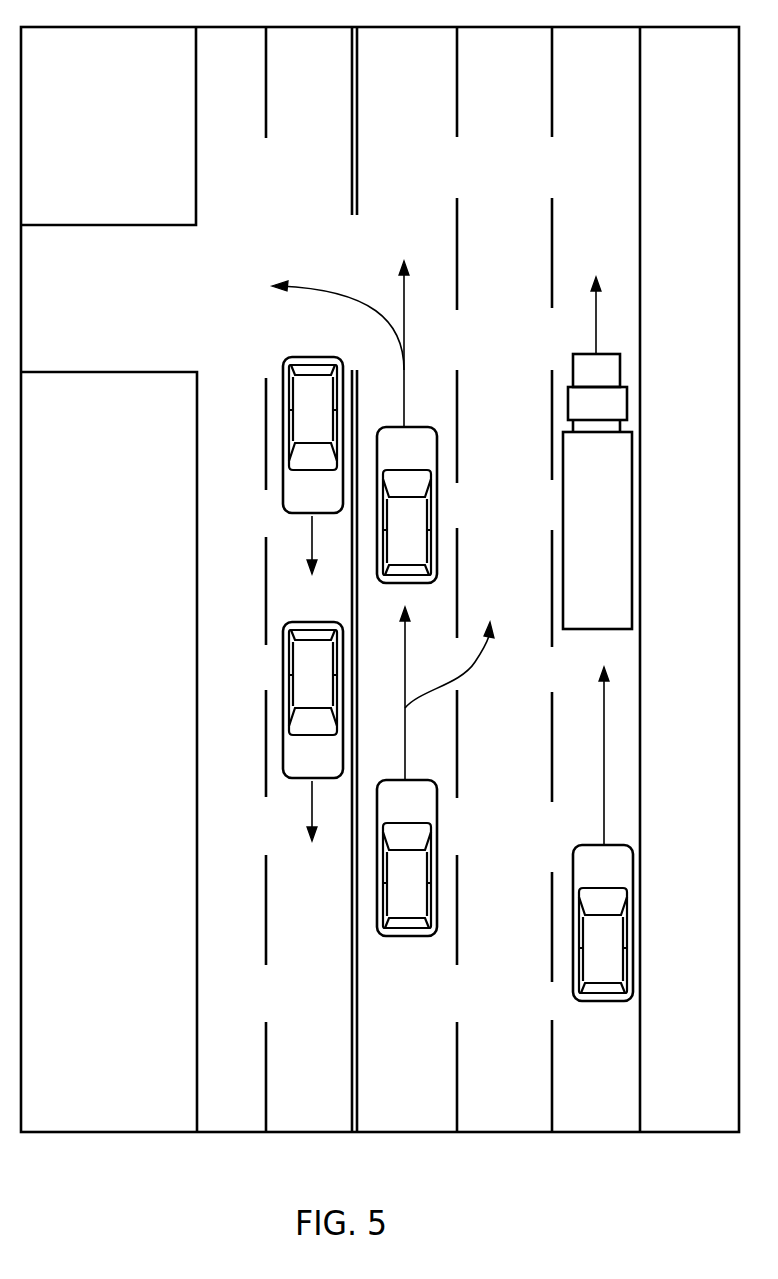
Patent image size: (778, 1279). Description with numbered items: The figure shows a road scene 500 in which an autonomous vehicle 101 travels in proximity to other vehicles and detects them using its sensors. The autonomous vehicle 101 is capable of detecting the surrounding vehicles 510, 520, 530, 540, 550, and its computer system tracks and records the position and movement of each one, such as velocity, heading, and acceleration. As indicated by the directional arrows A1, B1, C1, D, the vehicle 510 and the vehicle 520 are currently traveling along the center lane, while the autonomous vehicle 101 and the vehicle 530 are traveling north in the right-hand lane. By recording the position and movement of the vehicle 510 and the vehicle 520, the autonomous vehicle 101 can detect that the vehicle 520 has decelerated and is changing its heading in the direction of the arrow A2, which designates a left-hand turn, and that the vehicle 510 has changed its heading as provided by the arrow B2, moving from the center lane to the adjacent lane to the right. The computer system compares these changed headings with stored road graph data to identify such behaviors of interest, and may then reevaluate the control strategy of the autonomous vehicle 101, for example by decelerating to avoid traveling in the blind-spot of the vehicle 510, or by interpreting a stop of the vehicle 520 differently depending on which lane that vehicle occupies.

The road environment / intersection scene 500 is at (605, 127).
The autonomous vehicle 101 is at (633, 900).
The vehicle 510 is at (380, 885).
The vehicle 520 is at (437, 498).
The vehicle 530 is at (632, 480).
The vehicle 540 is at (283, 688).
The vehicle 550 is at (283, 444).
The directional arrow A1 is at (405, 301).
The arrow A2 is at (332, 293).
The directional arrow B1 is at (406, 750).
The arrow B2 is at (482, 667).
The directional arrow C1 is at (604, 775).
The directional arrow D is at (597, 325).